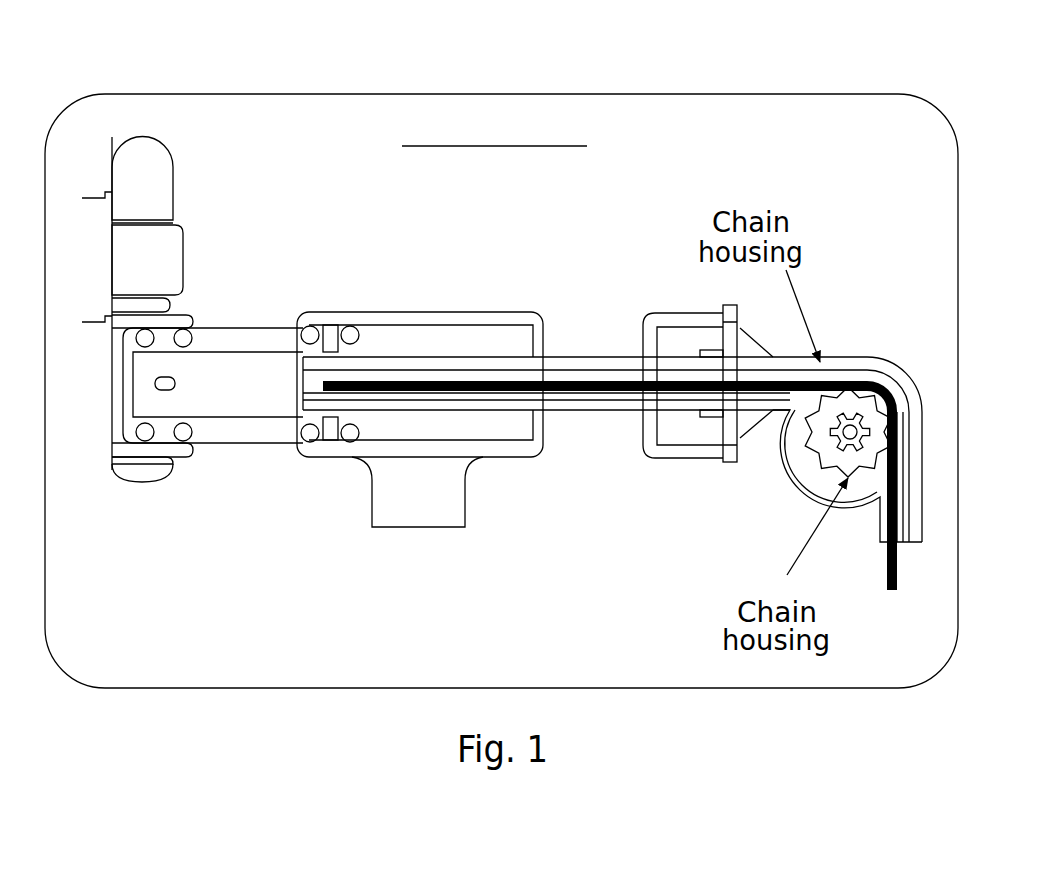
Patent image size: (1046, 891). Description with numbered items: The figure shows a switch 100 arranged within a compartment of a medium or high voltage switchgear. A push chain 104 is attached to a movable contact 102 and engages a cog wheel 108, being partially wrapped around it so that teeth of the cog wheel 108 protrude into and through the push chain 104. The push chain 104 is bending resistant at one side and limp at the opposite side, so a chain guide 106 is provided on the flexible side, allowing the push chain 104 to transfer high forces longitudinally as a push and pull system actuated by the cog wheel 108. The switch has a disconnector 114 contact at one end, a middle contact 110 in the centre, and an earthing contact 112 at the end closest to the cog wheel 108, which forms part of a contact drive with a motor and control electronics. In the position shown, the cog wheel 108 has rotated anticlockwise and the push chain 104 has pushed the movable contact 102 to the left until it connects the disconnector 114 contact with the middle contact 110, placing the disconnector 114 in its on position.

The switchgear arrangement 100 is at (510, 77).
The movable contact 102 is at (263, 345).
The push chain 104 is at (558, 380).
The chain guide 106 is at (447, 360).
The cog wheel 108 is at (860, 402).
The middle contact 110 is at (422, 490).
The earthing contact 112 is at (669, 455).
The disconnector 114 is at (148, 447).